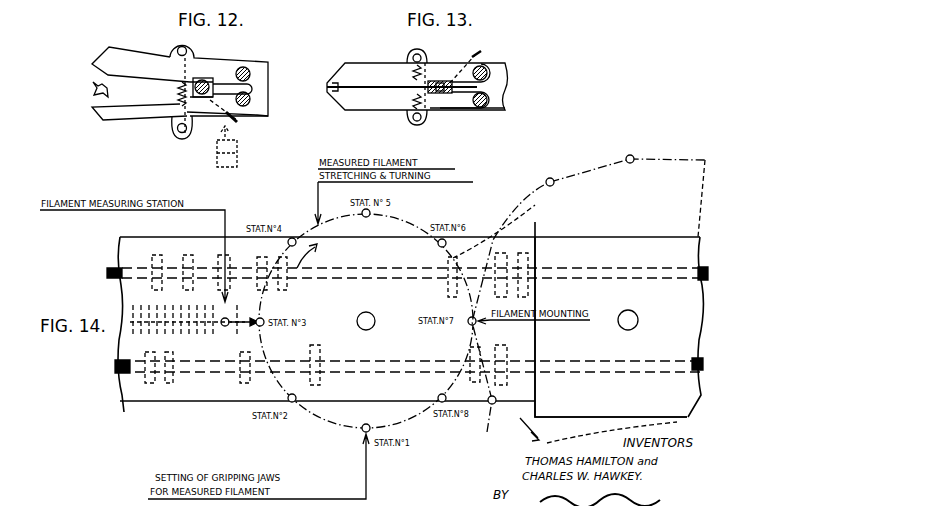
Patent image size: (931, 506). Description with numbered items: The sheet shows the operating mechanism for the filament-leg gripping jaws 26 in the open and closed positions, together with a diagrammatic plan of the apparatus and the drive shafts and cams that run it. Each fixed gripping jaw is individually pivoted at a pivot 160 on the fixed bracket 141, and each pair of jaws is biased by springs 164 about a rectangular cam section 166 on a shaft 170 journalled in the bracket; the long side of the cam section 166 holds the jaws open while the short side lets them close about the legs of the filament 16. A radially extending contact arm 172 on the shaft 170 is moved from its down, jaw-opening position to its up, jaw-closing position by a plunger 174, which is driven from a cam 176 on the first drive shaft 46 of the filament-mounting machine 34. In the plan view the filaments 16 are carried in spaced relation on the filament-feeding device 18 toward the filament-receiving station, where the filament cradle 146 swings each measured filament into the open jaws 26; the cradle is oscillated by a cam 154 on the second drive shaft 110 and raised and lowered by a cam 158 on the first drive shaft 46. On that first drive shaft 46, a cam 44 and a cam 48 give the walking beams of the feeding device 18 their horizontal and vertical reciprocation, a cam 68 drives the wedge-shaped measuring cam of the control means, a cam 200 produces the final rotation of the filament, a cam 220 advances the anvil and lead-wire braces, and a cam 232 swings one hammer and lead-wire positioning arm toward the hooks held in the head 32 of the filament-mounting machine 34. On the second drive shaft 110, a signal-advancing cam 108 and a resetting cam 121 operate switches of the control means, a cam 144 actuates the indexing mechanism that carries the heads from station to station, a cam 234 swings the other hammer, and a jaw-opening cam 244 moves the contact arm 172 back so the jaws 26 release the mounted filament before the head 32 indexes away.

In FIG. 12, the filament 16 is at (104, 86).
In FIG. 13, the filament 16 is at (340, 86).
In FIG. 12, the filament-leg gripping jaws 26 is at (150, 74).
In FIG. 13, the filament-leg gripping jaws 26 is at (370, 103).
In FIG. 12, the filament cradle 146 is at (92, 88).
In FIG. 12, the springs 164 is at (173, 93).
In FIG. 12, the cam section 166 is at (217, 82).
In FIG. 13, the cam section 166 is at (443, 79).
In FIG. 12, the shaft 170 is at (199, 81).
In FIG. 13, the shaft 170 is at (447, 93).
In FIG. 12, the pivot 160 is at (250, 92).
In FIG. 13, the pivot 160 is at (490, 100).
In FIG. 12, the fixed bracket 141 is at (262, 97).
In FIG. 13, the fixed bracket 141 is at (503, 107).
In FIG. 12, the contact arm 172 is at (236, 120).
In FIG. 13, the contact arm 172 is at (480, 53).
In FIG. 12, the plunger 174 is at (240, 155).
In FIG. 14, the cam 44 is at (152, 258).
In FIG. 14, the cam 48 is at (186, 258).
In FIG. 14, the cam 68 is at (221, 258).
In FIG. 14, the first drive shaft 46 is at (118, 272).
In FIG. 14, the filament-feeding device 18 is at (138, 306).
In FIG. 14, the cam 176 is at (264, 296).
In FIG. 14, the cam 158 is at (290, 283).
In FIG. 14, the cam 200 is at (450, 262).
In FIG. 14, the cam 220 is at (530, 258).
In FIG. 14, the cam 232 is at (500, 231).
In FIG. 14, the head 32 is at (548, 182).
In FIG. 14, the filament-mounting machine 34 is at (690, 137).
In FIG. 14, the cam 144 is at (322, 347).
In FIG. 14, the jaw-opening cam 244 is at (468, 352).
In FIG. 14, the cam 234 is at (510, 349).
In FIG. 14, the second drive shaft 110 is at (126, 374).
In FIG. 14, the signal-advancing cam 108 is at (148, 385).
In FIG. 14, the resetting cam 121 is at (170, 385).
In FIG. 14, the cam 154 is at (244, 385).